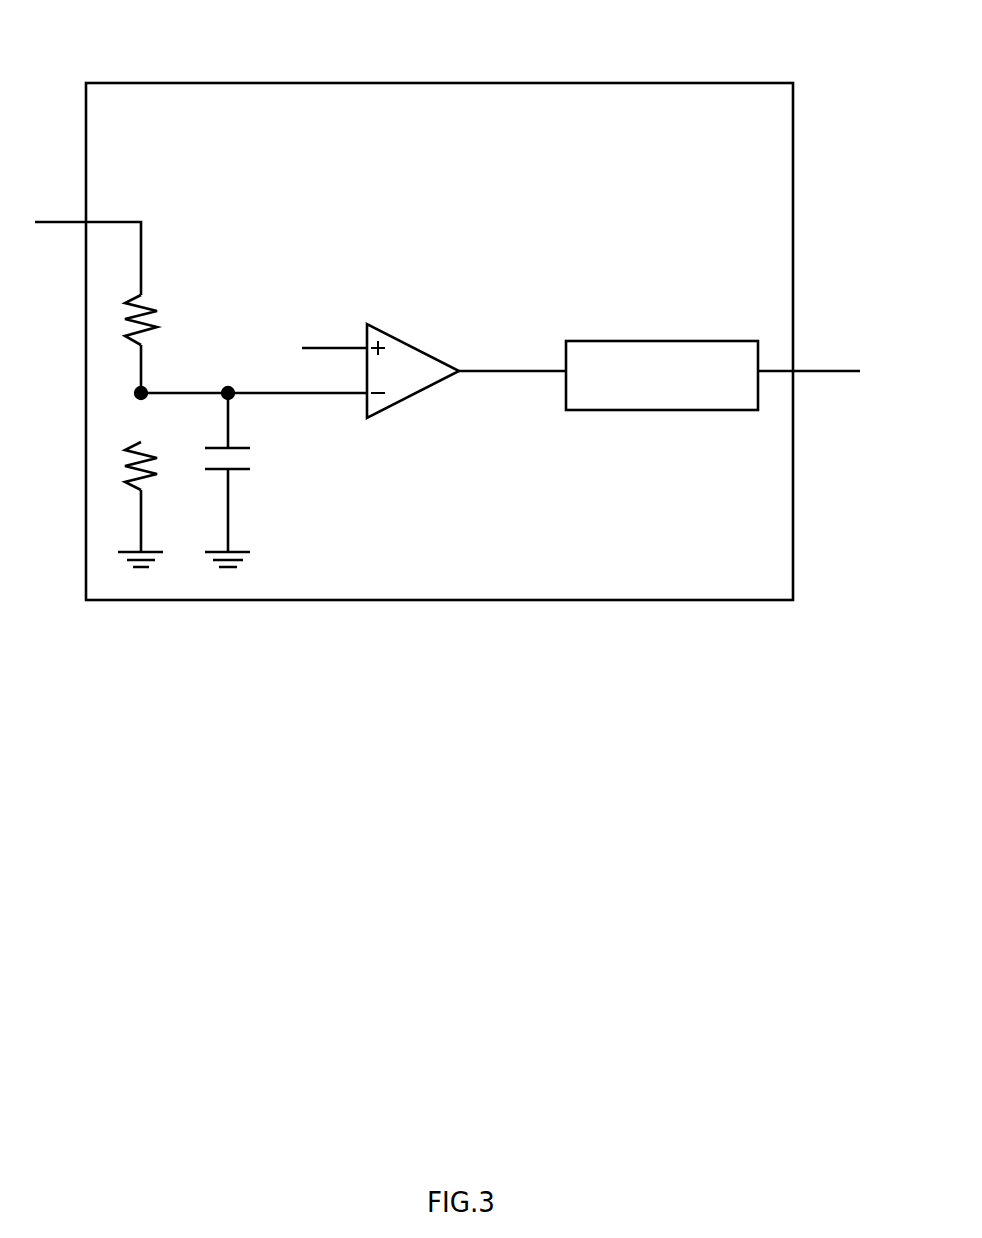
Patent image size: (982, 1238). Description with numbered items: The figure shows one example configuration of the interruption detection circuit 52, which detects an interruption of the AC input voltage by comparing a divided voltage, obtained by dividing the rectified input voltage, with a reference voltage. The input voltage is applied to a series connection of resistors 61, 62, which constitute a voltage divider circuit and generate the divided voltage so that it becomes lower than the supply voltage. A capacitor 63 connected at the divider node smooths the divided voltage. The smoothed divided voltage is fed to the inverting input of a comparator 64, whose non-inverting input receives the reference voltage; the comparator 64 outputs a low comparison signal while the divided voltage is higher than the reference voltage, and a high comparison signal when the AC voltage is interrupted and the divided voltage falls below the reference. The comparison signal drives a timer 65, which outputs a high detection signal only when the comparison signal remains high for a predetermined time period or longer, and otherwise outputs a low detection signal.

The interruption detection circuit 52 is at (378, 83).
The resistor 61 is at (158, 322).
The resistor 62 is at (153, 465).
The capacitor 63 is at (245, 470).
The comparator 64 is at (417, 347).
The timer 65 is at (637, 341).